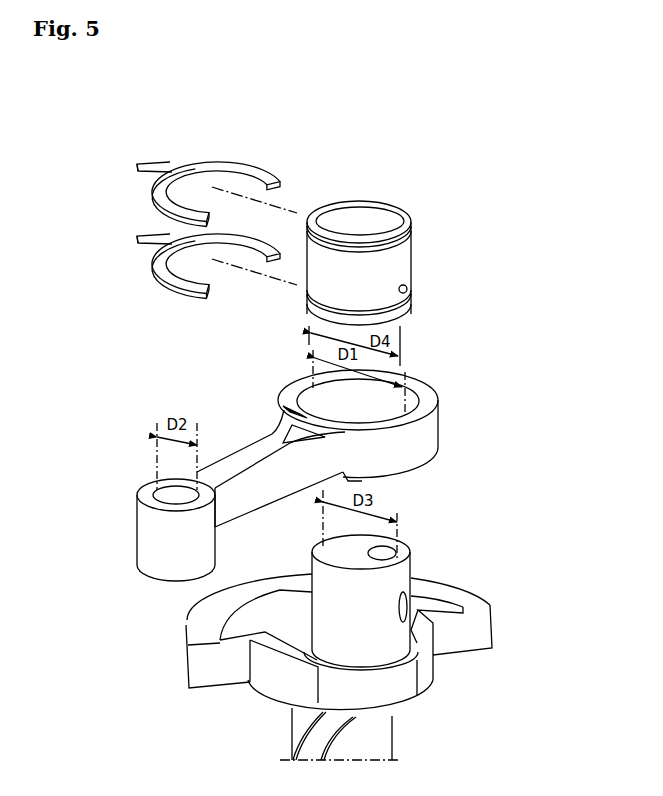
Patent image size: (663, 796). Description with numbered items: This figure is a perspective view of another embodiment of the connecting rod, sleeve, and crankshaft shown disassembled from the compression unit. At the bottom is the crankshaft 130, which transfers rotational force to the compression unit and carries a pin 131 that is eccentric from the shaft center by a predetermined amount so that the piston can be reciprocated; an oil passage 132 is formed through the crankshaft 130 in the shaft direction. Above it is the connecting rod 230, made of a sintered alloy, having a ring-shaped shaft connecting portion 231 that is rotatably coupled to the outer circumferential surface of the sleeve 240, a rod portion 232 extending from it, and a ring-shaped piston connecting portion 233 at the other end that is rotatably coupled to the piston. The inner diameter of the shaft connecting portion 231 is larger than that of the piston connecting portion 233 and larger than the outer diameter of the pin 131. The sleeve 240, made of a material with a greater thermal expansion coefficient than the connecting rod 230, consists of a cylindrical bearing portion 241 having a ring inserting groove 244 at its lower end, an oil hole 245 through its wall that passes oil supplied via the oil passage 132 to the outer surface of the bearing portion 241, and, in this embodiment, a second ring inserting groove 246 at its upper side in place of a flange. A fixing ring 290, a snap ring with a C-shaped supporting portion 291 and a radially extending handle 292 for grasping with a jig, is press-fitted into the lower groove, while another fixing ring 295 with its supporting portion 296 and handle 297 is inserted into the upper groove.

The crankshaft 130 is at (366, 622).
The pin 131 is at (388, 582).
The oil passage 132 is at (384, 552).
The connecting rod 230 is at (295, 471).
The shaft connecting portion 231 is at (423, 380).
The rod portion 232 is at (236, 444).
The piston connecting portion 233 is at (138, 488).
The sleeve 240 is at (394, 243).
The bearing portion 241 is at (412, 262).
The ring inserting groove 244 is at (412, 308).
The oil hole 245 is at (407, 289).
The ring inserting groove 246 is at (412, 232).
The fixing ring 290 is at (179, 273).
The supporting portion 291 is at (150, 255).
The handle 292 is at (137, 238).
The fixing ring 295 is at (179, 157).
The supporting portion 296 is at (150, 184).
The handle 297 is at (137, 166).